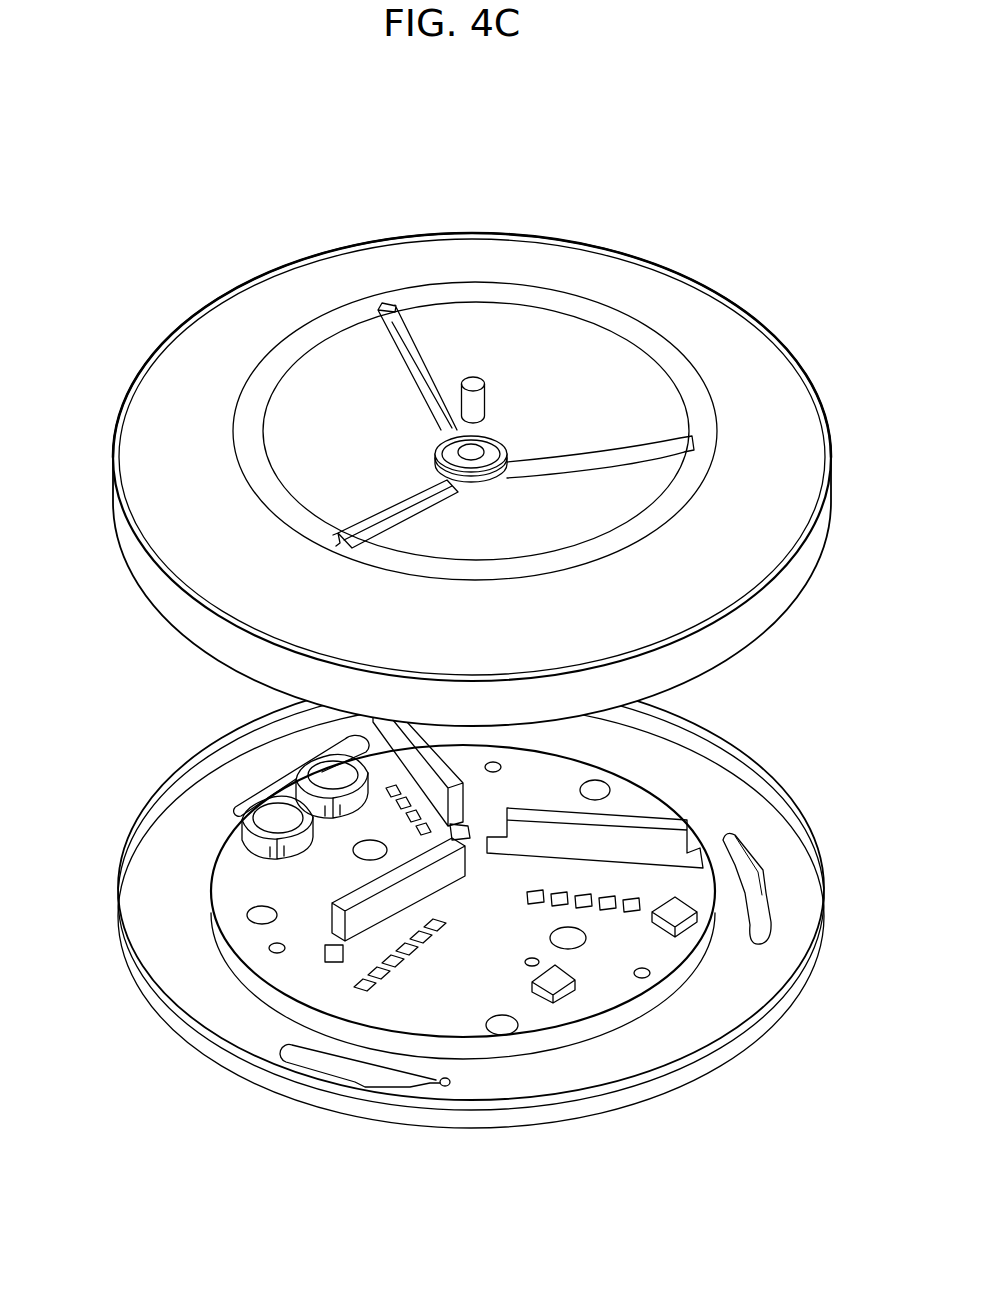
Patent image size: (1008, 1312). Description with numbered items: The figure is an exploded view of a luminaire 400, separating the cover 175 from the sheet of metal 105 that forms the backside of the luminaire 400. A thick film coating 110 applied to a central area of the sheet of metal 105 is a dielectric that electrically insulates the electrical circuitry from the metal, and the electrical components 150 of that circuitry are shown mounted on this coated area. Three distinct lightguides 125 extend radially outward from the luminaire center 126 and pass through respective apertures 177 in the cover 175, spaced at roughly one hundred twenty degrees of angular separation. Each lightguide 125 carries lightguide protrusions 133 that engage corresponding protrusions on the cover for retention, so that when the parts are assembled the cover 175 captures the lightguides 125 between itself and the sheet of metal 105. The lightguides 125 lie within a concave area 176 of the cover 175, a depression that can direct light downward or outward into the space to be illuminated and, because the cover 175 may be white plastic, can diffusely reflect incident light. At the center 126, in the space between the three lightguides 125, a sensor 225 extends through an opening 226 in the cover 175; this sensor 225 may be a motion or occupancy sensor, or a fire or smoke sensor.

The luminaire 400 is at (811, 174).
The sheet of metal 105 is at (772, 990).
The thick film coating 110 is at (487, 1010).
The lightguides 125 is at (378, 728).
The luminaire center 126 is at (512, 392).
The lightguide protrusions 133 is at (505, 802).
The electrical components 150 is at (378, 830).
The cover 175 is at (685, 589).
The concave area 176 is at (360, 479).
The apertures 177 is at (417, 350).
The sensor 225 is at (478, 377).
The opening 226 is at (480, 468).